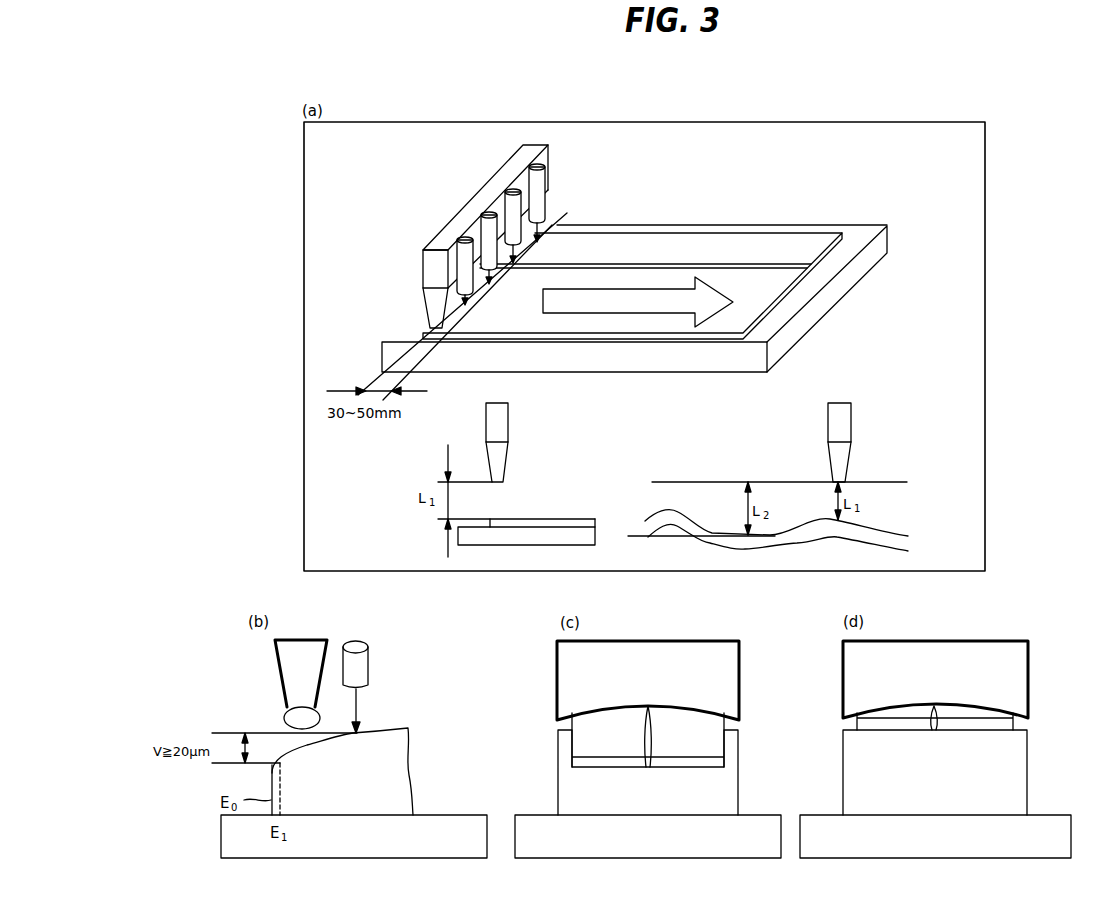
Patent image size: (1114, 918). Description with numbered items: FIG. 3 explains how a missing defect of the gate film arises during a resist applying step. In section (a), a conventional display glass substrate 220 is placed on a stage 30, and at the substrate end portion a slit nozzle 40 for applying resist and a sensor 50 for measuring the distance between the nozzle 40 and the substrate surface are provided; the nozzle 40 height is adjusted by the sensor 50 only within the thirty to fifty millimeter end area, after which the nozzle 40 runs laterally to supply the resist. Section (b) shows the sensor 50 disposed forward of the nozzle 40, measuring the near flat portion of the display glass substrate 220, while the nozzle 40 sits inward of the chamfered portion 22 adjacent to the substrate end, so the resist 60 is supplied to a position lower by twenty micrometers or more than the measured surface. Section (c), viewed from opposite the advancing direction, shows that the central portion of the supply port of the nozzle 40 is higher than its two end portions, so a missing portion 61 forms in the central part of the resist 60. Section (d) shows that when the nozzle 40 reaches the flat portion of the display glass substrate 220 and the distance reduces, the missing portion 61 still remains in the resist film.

The chamfered portion 22 is at (272, 770).
The stage 30 is at (827, 300).
The nozzle 40 is at (455, 218).
The sensor 50 is at (536, 164).
The resist 60 is at (283, 719).
The missing portion 61 is at (820, 259).
The display glass substrate 220 is at (783, 245).